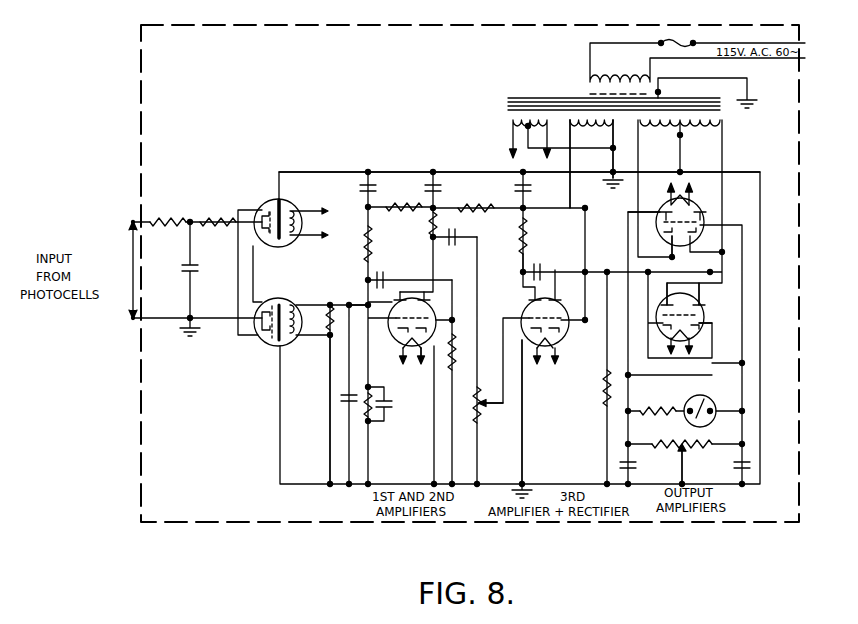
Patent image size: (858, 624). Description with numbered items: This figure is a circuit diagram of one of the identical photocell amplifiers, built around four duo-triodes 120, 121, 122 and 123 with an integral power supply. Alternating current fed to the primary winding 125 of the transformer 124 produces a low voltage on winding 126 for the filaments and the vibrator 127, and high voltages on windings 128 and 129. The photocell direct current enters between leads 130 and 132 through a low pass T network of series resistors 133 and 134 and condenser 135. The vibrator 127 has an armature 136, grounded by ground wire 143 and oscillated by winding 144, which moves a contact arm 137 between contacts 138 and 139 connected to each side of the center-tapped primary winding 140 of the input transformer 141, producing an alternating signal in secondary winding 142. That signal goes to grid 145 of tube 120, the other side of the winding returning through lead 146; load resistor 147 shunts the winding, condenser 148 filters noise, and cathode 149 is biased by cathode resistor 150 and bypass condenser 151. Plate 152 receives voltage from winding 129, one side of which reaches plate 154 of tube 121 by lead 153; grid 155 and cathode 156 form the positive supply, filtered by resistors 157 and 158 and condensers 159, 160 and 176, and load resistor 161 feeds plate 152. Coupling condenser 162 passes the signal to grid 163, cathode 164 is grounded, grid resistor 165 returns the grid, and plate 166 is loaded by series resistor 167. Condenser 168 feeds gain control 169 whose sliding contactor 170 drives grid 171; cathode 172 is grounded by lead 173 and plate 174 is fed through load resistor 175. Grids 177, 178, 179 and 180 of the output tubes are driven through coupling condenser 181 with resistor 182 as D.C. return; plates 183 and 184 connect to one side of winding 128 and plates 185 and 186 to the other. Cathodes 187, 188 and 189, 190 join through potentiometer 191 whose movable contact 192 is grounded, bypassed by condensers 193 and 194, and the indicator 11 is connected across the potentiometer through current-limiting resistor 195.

The meter 11 is at (708, 397).
The duo-triode 120 is at (401, 360).
The duo-triode 121 is at (558, 346).
The duo-triode 122 is at (704, 325).
The duo-triode 123 is at (692, 192).
The transformer 124 is at (508, 103).
The primary winding 125 is at (622, 68).
The winding 126 is at (513, 135).
The vibrator 127 is at (262, 208).
The winding 128 is at (694, 136).
The winding 129 is at (605, 126).
The lead 130 is at (133, 222).
The ground lead 132 is at (133, 318).
The resistor 133 is at (168, 212).
The resistor 134 is at (216, 212).
The condenser 135 is at (198, 271).
The vibrating armature 136 is at (282, 240).
The contact arm 137 is at (268, 226).
The contact 138 is at (266, 232).
The contact 139 is at (276, 200).
The primary winding 140 is at (264, 332).
The input transformer 141 is at (272, 340).
The secondary winding 142 is at (296, 312).
The ground wire 143 is at (340, 172).
The winding 144 is at (298, 222).
The grid 145 is at (384, 305).
The lead 146 is at (329, 370).
The load resistor 147 is at (328, 330).
The condenser 148 is at (341, 400).
The cathode 149 is at (403, 345).
The cathode resistor 150 is at (372, 420).
The bypass condenser 151 is at (393, 402).
The plate 152 is at (412, 312).
The lead 153 is at (580, 180).
The plate 154 is at (565, 302).
The grid 155 is at (572, 328).
The cathode 156 is at (558, 364).
The resistor 157 is at (476, 204).
The resistor 158 is at (390, 210).
The condenser 159 is at (425, 188).
The condenser 160 is at (360, 188).
The load resistor 161 is at (374, 243).
The coupling condenser 162 is at (384, 276).
The grid 163 is at (462, 322).
The cathode 164 is at (421, 362).
The grid resistor 165 is at (465, 349).
The plate 166 is at (438, 303).
The series resistor 167 is at (438, 224).
The condenser 168 is at (452, 247).
The gain control 169 is at (482, 426).
The sliding contactor 170 is at (488, 407).
The grid 171 is at (530, 306).
The cathode 172 is at (536, 365).
The lead 173 is at (523, 440).
The plate 174 is at (541, 270).
The load resistor 175 is at (518, 242).
The condenser 176 is at (531, 190).
The grid 177 is at (663, 327).
The grid 178 is at (700, 315).
The grid 179 is at (706, 214).
The grid 180 is at (640, 212).
The coupling condenser 181 is at (538, 262).
The resistor 182 is at (603, 396).
The plate 183 is at (702, 303).
The plate 184 is at (668, 240).
The plate 185 is at (665, 302).
The plate 186 is at (689, 254).
The cathode 187 is at (700, 330).
The cathode 188 is at (668, 190).
The cathode 189 is at (669, 344).
The cathode 190 is at (701, 210).
The potentiometer 191 is at (690, 441).
The movable contact 192 is at (733, 464).
The condenser 193 is at (637, 465).
The condenser 194 is at (684, 452).
The resistor 195 is at (660, 408).